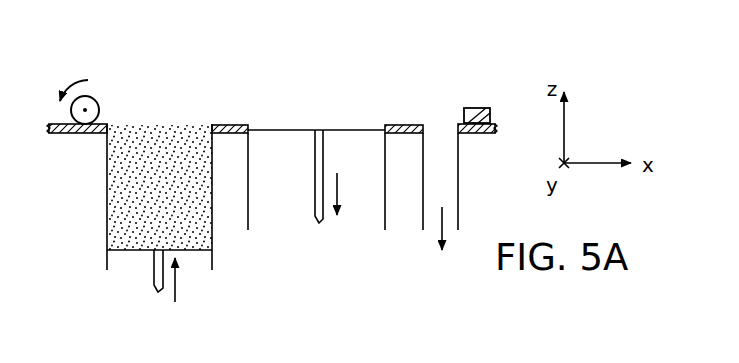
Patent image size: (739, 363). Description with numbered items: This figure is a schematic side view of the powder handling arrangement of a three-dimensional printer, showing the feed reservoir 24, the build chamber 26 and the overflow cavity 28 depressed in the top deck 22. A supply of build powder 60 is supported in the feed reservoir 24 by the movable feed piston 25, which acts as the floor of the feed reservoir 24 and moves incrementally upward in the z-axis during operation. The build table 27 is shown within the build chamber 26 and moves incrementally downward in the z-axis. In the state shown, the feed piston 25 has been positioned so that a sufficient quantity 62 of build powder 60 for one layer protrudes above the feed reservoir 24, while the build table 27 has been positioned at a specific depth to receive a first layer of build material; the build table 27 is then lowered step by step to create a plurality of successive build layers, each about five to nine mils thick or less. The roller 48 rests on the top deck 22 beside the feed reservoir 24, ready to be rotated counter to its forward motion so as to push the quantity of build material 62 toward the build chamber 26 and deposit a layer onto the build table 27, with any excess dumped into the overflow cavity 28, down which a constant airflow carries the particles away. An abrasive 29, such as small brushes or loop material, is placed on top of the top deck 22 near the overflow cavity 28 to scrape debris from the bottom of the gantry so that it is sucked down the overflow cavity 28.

The top deck 22 is at (65, 134).
The feed reservoir 24 is at (153, 142).
The feed piston 25 is at (130, 252).
The build chamber 26 is at (319, 90).
The build table 27 is at (285, 131).
The overflow cavity 28 is at (442, 118).
The abrasive 29 is at (480, 106).
The roller 48 is at (95, 100).
The build powder 60 is at (120, 208).
The quantity of build material 62 is at (192, 107).